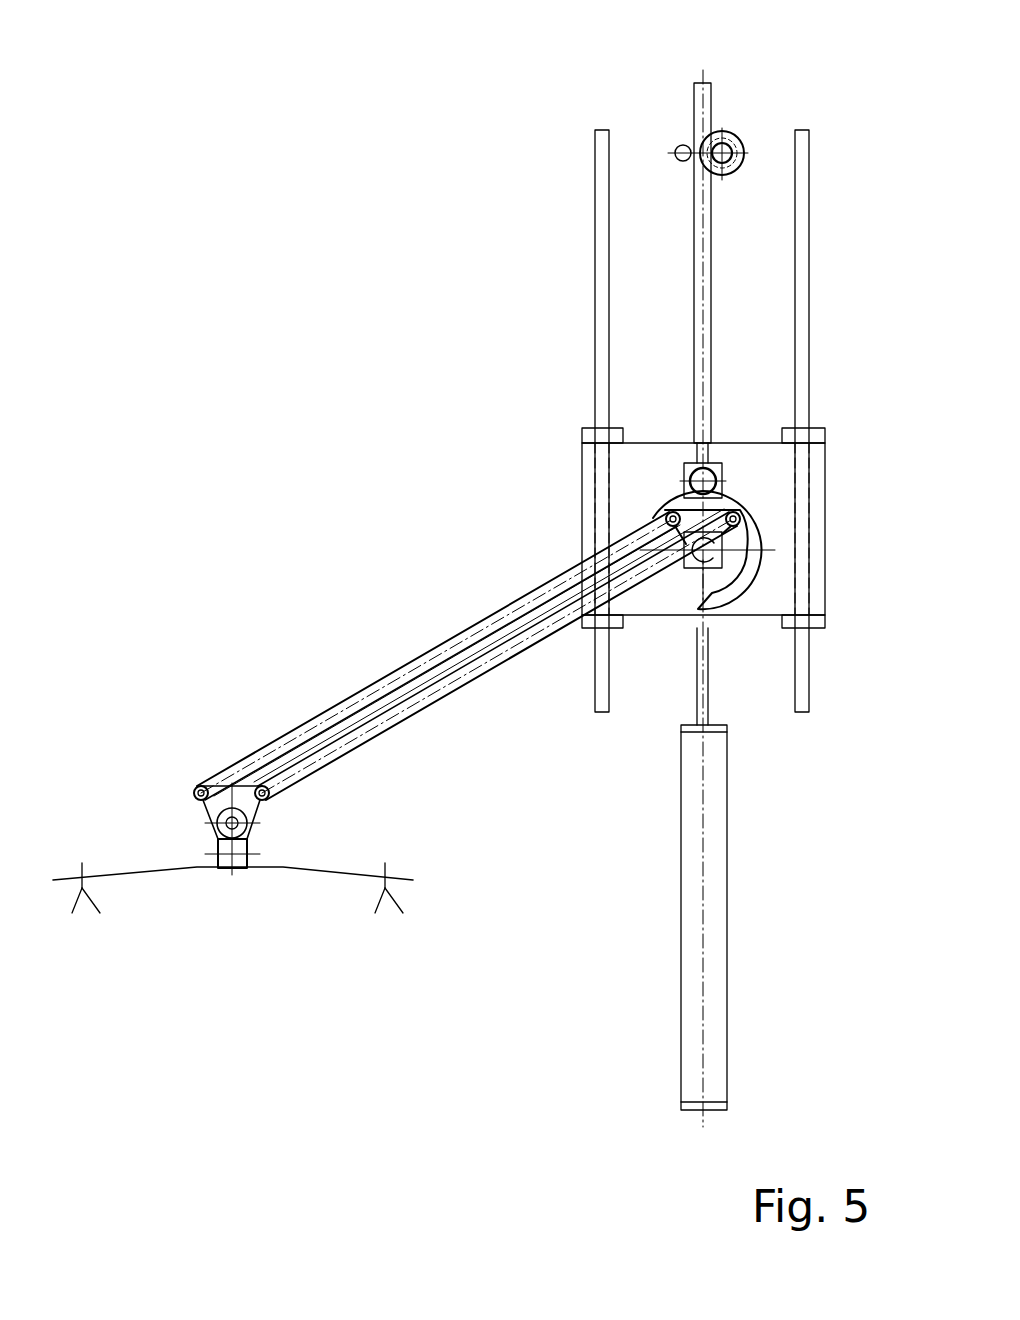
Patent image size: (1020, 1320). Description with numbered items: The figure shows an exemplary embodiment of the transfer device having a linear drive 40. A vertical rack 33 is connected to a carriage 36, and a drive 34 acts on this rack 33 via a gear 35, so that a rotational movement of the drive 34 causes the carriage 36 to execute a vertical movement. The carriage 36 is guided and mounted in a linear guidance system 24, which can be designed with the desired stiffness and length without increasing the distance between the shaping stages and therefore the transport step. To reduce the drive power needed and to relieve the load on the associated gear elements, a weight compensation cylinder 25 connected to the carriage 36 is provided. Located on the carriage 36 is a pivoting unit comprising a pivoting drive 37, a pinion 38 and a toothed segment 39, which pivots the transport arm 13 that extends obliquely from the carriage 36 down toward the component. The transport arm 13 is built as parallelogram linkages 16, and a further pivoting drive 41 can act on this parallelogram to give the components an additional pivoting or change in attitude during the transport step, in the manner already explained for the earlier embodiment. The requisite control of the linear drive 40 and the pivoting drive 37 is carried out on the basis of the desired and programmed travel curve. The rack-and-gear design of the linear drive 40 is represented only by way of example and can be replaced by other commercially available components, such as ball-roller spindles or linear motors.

The transport arm 13 is at (410, 735).
The parallelogram linkages 16 is at (388, 718).
The linear guidance system 24 is at (602, 265).
The weight compensation cylinder 25 is at (695, 930).
The rack 33 is at (700, 295).
The drive 34 is at (743, 147).
The gear 35 is at (730, 140).
The carriage 36 is at (632, 503).
The pivoting drive 37 is at (687, 467).
The pinion 38 is at (698, 485).
The toothed segment 39 is at (750, 577).
The linear drive 40 is at (651, 74).
The pivoting drive 41 is at (720, 572).